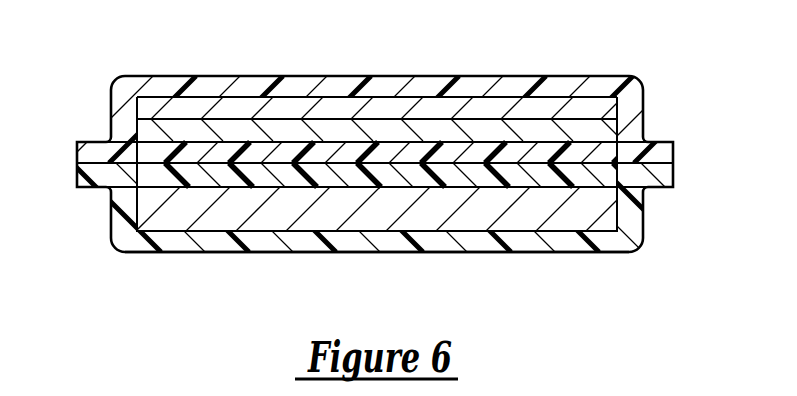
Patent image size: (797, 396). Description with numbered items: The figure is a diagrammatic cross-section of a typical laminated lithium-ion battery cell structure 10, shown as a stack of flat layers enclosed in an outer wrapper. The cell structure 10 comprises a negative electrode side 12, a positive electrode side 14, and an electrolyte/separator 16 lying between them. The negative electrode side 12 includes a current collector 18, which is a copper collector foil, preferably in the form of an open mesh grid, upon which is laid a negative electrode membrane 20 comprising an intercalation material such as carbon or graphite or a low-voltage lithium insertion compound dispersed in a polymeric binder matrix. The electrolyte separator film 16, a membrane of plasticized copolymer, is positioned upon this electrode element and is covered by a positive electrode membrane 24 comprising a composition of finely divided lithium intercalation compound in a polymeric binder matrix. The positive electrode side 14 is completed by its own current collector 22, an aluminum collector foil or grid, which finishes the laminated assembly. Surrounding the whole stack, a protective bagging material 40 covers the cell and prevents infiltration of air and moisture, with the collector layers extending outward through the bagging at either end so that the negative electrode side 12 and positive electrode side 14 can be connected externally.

The laminated battery cell structure 10 is at (398, 166).
The negative electrode side 12 is at (239, 95).
The positive electrode side 14 is at (254, 227).
The electrolyte/separator 16 is at (573, 152).
The current collector 18 is at (339, 108).
The negative electrode membrane 20 is at (151, 130).
The current collector 22 is at (166, 220).
The positive electrode membrane 24 is at (576, 178).
The protective bagging material 40 is at (483, 243).